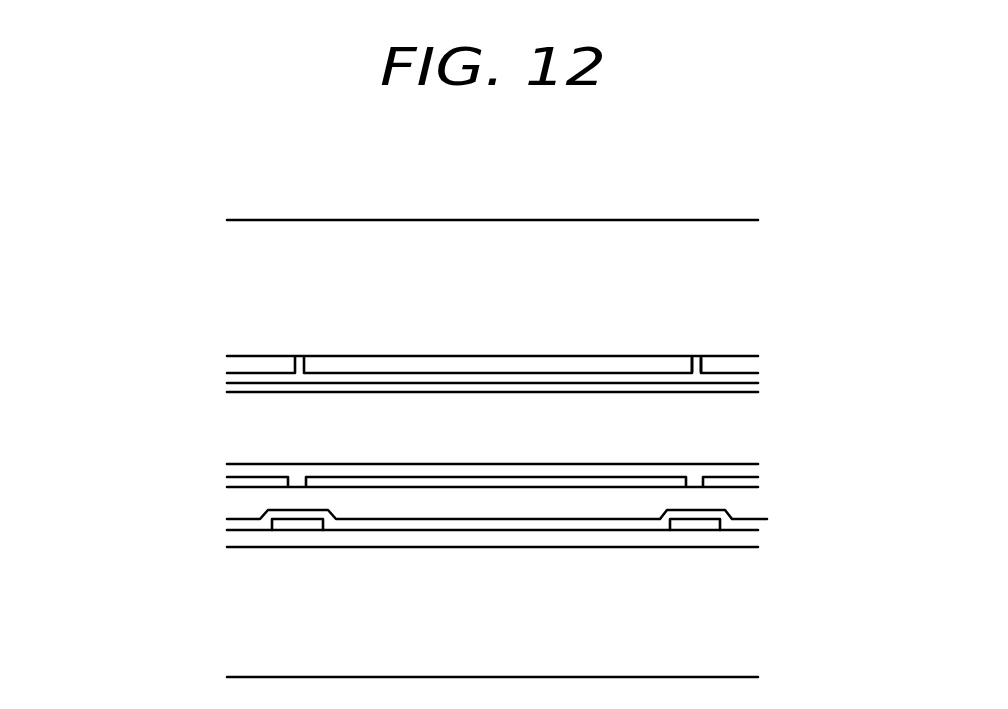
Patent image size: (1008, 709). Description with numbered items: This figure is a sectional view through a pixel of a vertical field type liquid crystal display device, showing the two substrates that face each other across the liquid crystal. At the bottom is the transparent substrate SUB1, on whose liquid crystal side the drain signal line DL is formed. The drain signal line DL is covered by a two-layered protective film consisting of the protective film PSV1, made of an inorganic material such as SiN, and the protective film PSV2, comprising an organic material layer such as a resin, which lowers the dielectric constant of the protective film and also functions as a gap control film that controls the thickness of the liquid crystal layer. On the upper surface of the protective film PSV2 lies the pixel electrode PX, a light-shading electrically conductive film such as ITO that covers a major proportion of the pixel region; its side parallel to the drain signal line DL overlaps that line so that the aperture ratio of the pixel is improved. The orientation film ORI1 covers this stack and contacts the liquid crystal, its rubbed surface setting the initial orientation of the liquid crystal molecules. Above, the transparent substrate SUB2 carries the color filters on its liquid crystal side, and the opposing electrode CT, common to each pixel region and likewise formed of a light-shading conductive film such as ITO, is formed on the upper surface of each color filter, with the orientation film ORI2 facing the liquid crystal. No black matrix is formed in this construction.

The transparent substrate SUB2 is at (245, 288).
The opposing electrode CT is at (229, 379).
The second orientation (alignment) layer ORI2 is at (753, 391).
The orientation film ORI1 is at (246, 465).
The pixel electrode PX is at (667, 476).
The protective film PSV2 is at (247, 510).
The drain signal line DL is at (717, 525).
The protective film PSV1 is at (228, 527).
The transparent substrate SUB1 is at (250, 622).